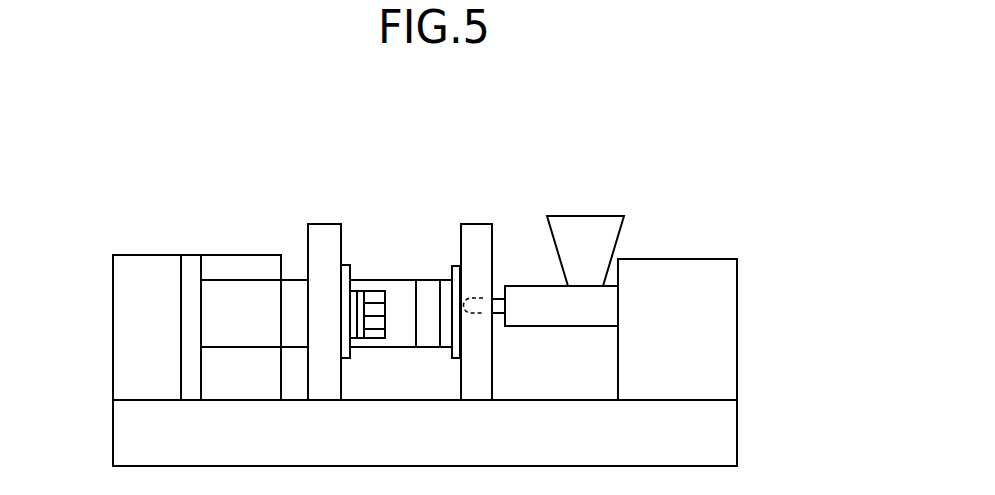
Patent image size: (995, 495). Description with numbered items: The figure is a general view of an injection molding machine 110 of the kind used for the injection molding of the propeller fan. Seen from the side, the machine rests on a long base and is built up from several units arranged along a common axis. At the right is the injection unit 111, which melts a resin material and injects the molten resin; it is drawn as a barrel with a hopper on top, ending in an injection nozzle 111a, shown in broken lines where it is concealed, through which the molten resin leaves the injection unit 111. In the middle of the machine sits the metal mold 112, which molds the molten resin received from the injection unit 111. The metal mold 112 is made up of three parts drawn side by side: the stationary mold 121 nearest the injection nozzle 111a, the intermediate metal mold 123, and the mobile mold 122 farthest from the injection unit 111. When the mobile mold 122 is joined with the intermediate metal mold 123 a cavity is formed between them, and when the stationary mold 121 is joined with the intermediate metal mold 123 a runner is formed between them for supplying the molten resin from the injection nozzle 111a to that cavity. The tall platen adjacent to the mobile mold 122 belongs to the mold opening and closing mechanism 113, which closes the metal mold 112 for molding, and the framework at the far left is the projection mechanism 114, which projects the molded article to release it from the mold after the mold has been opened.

The injection molding machine 110 is at (717, 162).
The injection unit 111 is at (523, 298).
The injection nozzle 111a is at (483, 298).
The metal mold 112 is at (409, 230).
The mold opening and closing mechanism 113 is at (293, 300).
The projection mechanism 114 is at (238, 270).
The stationary mold 121 is at (446, 298).
The mobile mold 122 is at (402, 300).
The intermediate metal mold 123 is at (429, 300).